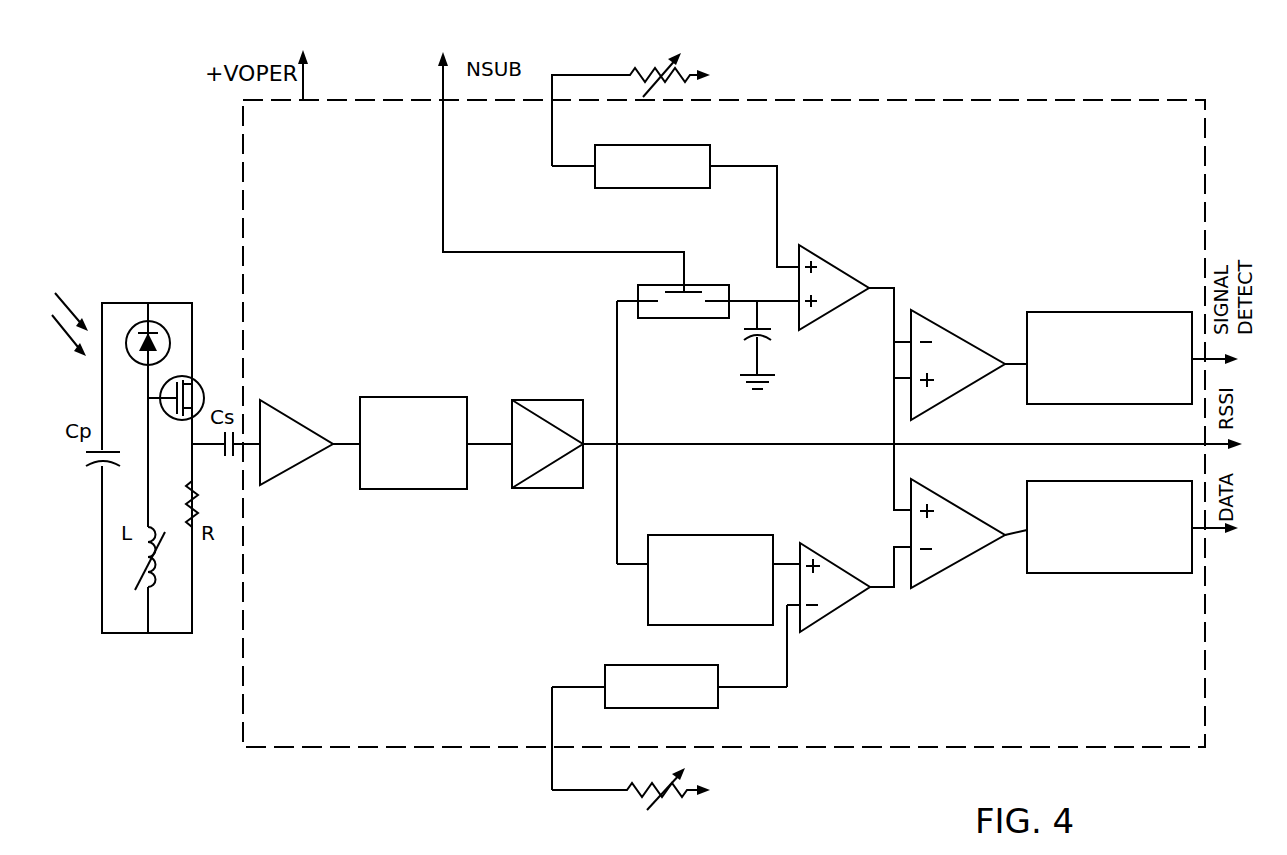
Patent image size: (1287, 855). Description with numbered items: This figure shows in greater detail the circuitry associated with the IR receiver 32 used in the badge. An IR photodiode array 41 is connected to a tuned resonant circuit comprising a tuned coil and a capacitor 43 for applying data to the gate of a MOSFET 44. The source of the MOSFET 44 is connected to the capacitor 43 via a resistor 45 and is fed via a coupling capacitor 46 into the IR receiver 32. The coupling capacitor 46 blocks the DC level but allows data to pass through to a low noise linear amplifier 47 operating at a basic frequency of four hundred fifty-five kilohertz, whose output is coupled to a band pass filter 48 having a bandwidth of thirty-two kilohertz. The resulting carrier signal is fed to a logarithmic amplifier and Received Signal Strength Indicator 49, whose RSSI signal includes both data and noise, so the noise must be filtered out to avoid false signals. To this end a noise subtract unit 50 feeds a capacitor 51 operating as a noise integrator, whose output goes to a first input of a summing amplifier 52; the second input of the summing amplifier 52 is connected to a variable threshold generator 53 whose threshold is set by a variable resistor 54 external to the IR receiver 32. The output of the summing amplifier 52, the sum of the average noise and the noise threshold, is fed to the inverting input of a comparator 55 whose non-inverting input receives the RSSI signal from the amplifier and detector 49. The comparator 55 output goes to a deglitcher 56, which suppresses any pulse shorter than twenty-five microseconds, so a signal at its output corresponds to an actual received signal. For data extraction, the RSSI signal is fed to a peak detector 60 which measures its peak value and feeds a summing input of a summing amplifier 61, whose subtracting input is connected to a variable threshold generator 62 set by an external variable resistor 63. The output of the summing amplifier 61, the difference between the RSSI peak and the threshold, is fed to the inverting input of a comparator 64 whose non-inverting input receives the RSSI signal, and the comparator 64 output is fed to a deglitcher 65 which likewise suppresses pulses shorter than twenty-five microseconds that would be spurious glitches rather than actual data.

The IR receiver 32 is at (258, 752).
The IR photodiode array 41 is at (163, 337).
The capacitor 43 is at (101, 470).
The MOSFET 44 is at (186, 384).
The resistor 45 is at (194, 536).
The coupling capacitor 46 is at (230, 459).
The low noise linear amplifier 47 is at (300, 408).
The band pass filter 48 is at (411, 491).
The logarithmic amplifier and Received Signal Strength Indicator 49 is at (546, 490).
The noise subtract unit 50 is at (670, 319).
The capacitor 51 is at (762, 338).
The summing amplifier 52 is at (836, 311).
The variable threshold generator 53 is at (654, 145).
The variable resistor 54 is at (693, 74).
The comparator 55 is at (957, 335).
The deglitcher 56 is at (1113, 312).
The peak detector 60 is at (709, 535).
The summing amplifier 61 is at (836, 612).
The variable threshold generator 62 is at (719, 704).
The variable resistor 63 is at (690, 801).
The comparator 64 is at (960, 561).
The deglitcher 65 is at (1108, 574).